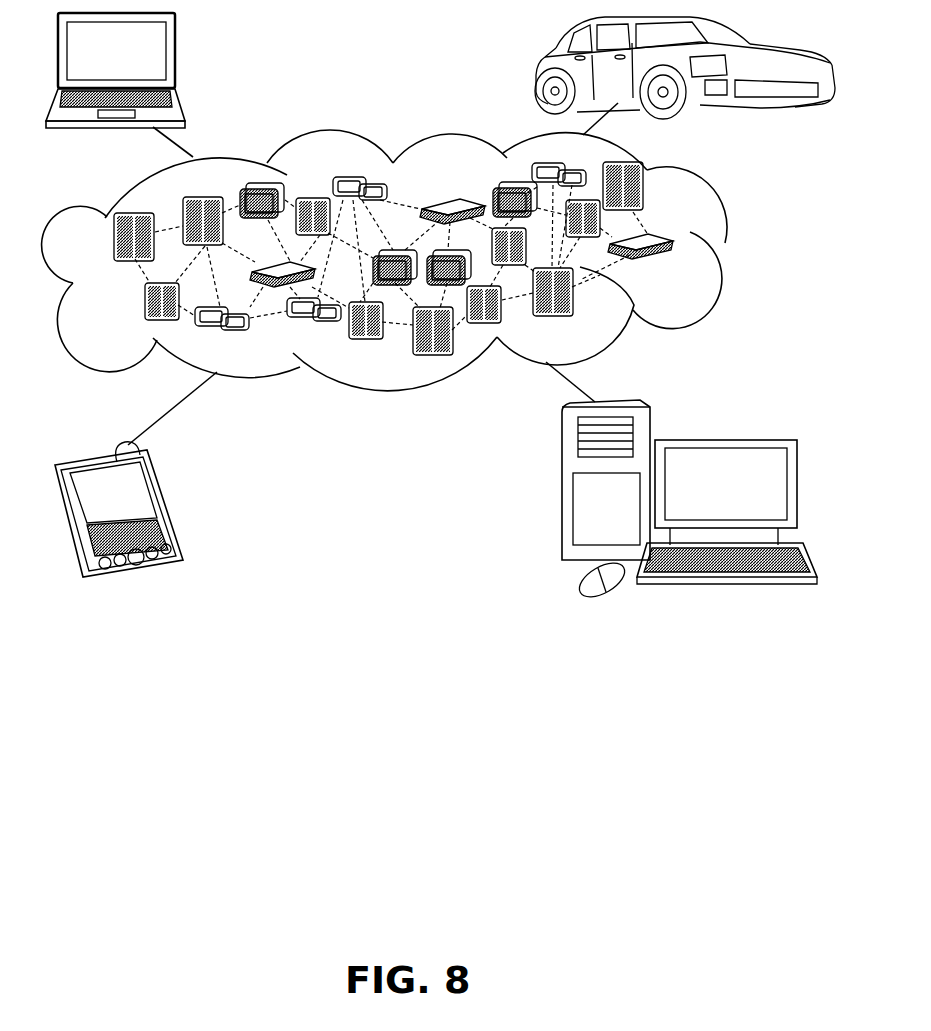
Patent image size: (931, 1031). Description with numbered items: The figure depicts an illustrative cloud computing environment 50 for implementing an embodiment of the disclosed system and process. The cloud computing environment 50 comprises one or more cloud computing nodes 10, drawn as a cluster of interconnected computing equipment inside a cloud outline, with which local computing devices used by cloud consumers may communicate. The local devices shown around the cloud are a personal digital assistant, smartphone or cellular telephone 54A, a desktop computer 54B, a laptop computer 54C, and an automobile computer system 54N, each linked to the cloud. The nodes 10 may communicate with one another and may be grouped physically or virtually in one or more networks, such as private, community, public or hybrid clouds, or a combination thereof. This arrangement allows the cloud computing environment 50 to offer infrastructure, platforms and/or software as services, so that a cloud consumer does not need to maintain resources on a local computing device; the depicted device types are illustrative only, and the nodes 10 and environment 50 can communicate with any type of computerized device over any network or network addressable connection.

The cloud computing nodes 10 is at (697, 277).
The cloud computing environment 50 is at (723, 243).
The cellular telephone 54A is at (168, 508).
The desktop computer 54B is at (743, 440).
The laptop computer 54C is at (177, 50).
The automobile computer system 54N is at (540, 72).